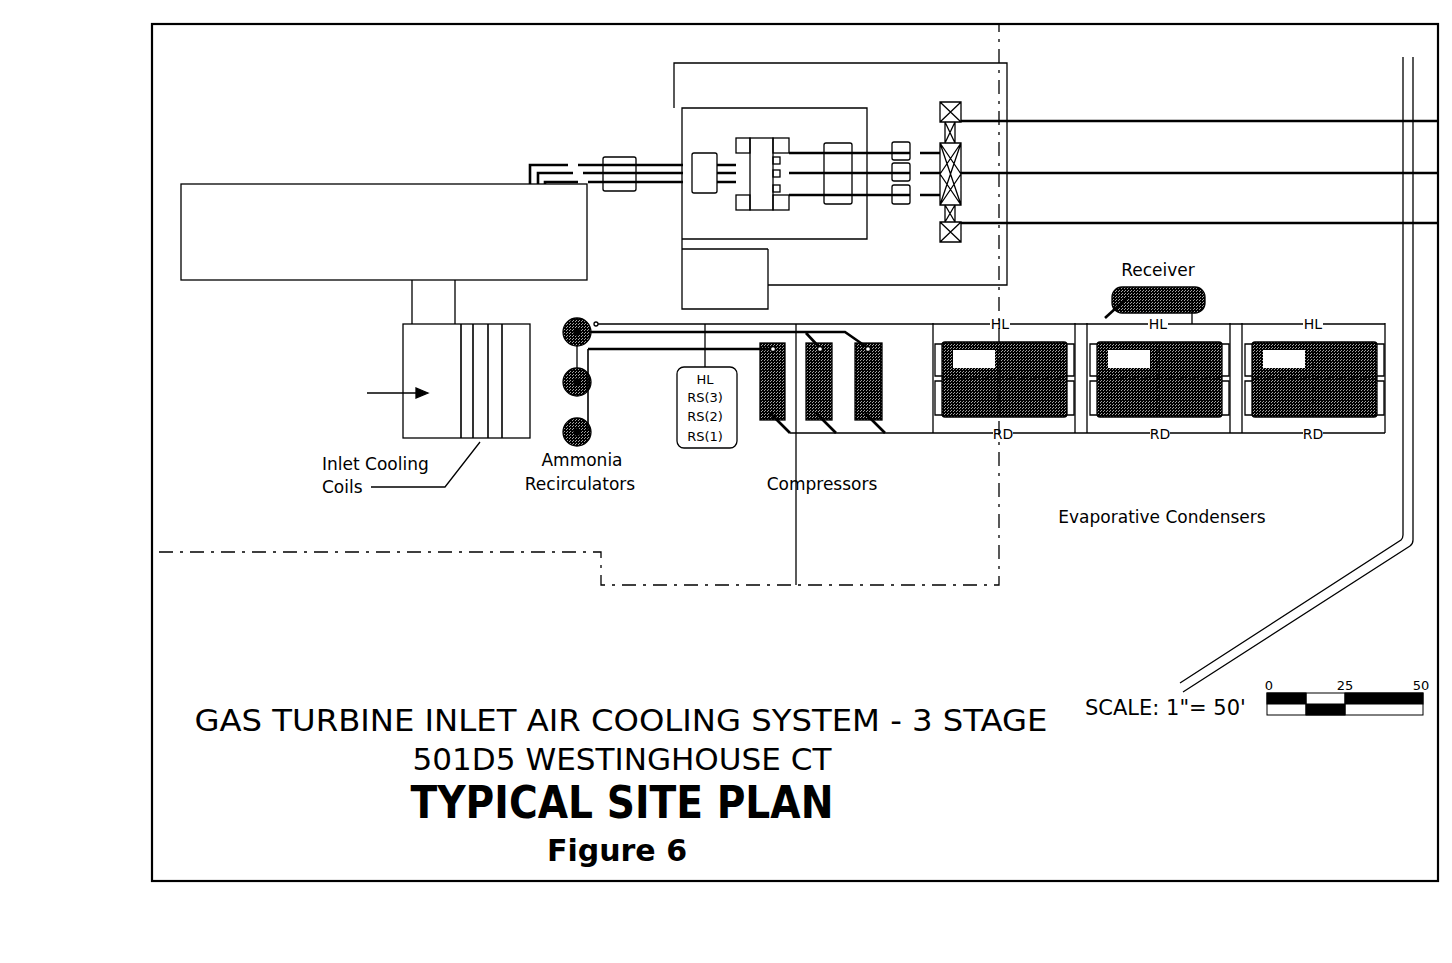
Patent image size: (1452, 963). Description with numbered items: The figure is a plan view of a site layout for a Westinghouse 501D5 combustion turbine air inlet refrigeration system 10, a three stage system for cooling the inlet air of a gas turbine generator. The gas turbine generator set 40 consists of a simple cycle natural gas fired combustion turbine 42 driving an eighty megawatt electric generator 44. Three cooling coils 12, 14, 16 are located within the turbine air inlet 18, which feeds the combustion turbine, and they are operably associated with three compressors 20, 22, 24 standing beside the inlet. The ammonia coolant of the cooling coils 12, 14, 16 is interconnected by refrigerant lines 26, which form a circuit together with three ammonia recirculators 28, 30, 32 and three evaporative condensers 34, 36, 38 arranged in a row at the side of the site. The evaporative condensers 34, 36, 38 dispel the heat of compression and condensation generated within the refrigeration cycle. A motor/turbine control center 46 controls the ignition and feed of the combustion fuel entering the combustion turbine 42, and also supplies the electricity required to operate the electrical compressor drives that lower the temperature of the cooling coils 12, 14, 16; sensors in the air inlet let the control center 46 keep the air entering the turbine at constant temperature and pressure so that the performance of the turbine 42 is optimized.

The combustion turbine air inlet refrigeration system 10 is at (361, 559).
The cooling coil 12 is at (498, 428).
The cooling coil 14 is at (481, 428).
The cooling coil 16 is at (465, 428).
The turbine air inlet 18 is at (427, 360).
The compressor 20 is at (778, 372).
The compressor 22 is at (822, 368).
The compressor 24 is at (873, 368).
The refrigerant lines 26 is at (638, 333).
The ammonia recirculator 28 is at (566, 321).
The ammonia recirculator 30 is at (590, 382).
The ammonia recirculator 32 is at (578, 428).
The evaporative condenser 34 is at (977, 398).
The evaporative condenser 36 is at (1125, 398).
The evaporative condenser 38 is at (1280, 400).
The gas turbine generator set 40 is at (492, 204).
The combustion turbine 42 is at (326, 200).
The electric generator 44 is at (786, 125).
The motor/turbine control center 46 is at (622, 168).